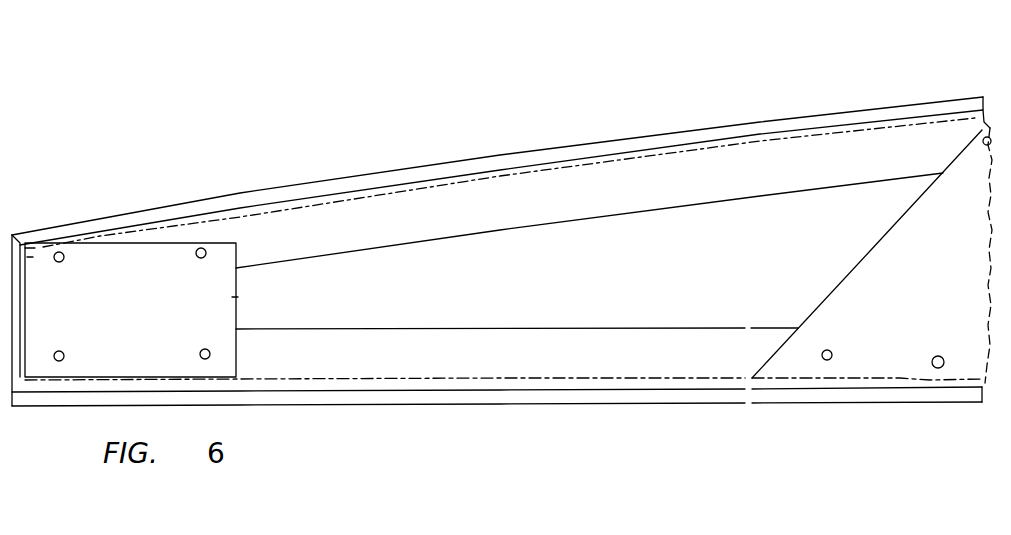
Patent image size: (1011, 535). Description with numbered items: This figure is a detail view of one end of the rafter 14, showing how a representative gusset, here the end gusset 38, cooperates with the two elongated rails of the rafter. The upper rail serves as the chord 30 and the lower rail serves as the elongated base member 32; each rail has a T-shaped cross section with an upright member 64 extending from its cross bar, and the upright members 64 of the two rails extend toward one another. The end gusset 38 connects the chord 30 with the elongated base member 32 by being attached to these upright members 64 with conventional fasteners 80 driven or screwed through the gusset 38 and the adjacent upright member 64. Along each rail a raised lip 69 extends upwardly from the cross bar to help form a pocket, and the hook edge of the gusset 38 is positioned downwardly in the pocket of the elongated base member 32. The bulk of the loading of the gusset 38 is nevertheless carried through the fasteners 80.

The rafter 14 is at (309, 86).
The chord 30 is at (623, 138).
The elongated base member 32 is at (583, 403).
The end gusset 38 is at (233, 368).
The upright member 64 is at (663, 190).
The raised lip 69 is at (418, 184).
The fasteners 80 is at (197, 257).